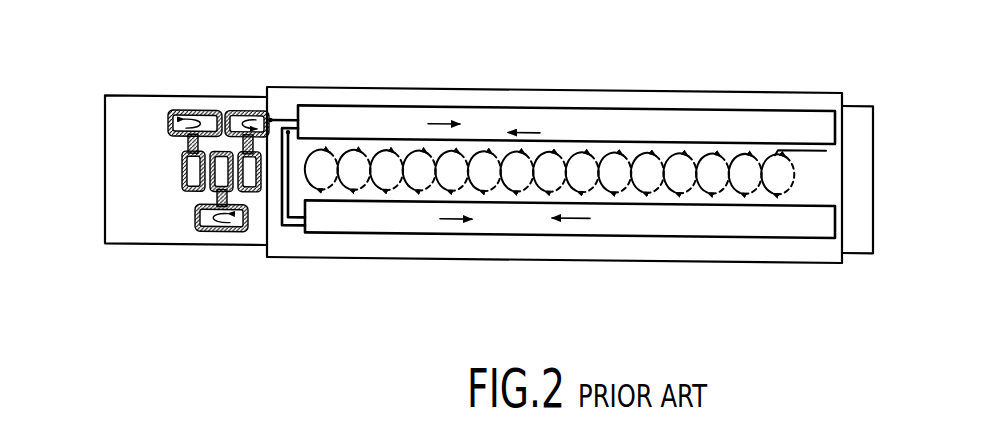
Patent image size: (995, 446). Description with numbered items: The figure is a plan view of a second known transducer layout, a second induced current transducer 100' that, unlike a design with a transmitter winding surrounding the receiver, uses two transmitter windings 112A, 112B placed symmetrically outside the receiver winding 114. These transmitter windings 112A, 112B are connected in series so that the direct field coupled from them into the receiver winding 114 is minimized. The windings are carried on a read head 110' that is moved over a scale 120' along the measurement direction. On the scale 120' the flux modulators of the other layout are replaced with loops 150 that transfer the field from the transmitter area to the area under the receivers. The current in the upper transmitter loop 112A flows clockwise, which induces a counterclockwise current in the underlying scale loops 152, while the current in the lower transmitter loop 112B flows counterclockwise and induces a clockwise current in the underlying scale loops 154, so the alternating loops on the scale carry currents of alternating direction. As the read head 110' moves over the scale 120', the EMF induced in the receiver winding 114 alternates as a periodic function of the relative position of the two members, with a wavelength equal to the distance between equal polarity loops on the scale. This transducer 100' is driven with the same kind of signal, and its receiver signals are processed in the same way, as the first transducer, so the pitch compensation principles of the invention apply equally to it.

The second induced current transducer 100' is at (448, 165).
The read head 110' is at (570, 148).
The upper transmitter winding 112A is at (368, 105).
The lower transmitter winding 112B is at (388, 235).
The receiver winding 114 is at (584, 151).
The scale 120' is at (186, 202).
The loops 150 is at (146, 175).
The scale loops 152 is at (168, 110).
The scale loops 154 is at (197, 226).